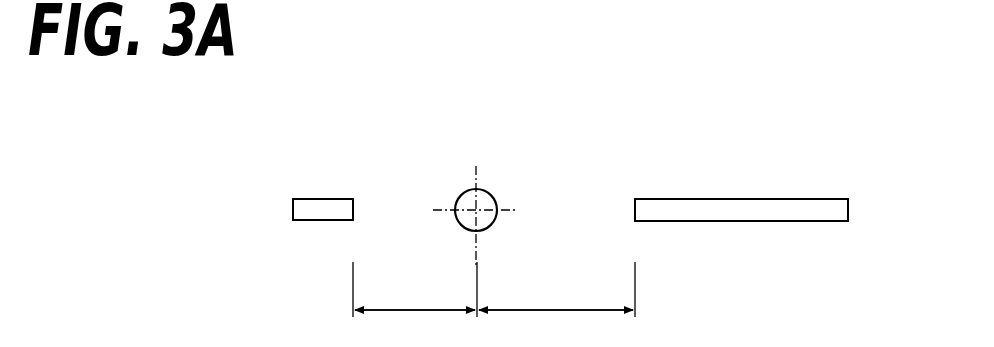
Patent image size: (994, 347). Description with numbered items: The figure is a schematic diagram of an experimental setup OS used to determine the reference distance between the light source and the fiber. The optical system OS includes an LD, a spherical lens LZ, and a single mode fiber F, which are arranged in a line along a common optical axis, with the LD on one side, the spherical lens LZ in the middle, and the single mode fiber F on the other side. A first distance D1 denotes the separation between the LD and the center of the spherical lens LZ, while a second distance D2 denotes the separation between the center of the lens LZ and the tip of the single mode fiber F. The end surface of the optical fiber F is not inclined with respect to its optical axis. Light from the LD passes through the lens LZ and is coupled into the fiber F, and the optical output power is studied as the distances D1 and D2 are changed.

The element LD is at (323, 199).
The spherical lens LZ is at (493, 195).
The single mode fiber F is at (657, 199).
The experimental setup OS is at (692, 136).
The distance between the LD and the center of the spherical lens D1 is at (415, 289).
The distance between the center of the lens and the tip of the single mode fiber D2 is at (557, 289).